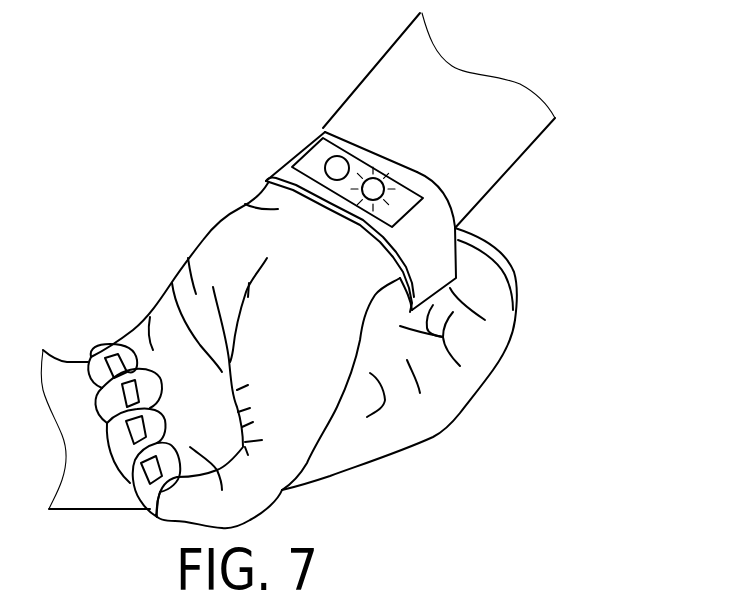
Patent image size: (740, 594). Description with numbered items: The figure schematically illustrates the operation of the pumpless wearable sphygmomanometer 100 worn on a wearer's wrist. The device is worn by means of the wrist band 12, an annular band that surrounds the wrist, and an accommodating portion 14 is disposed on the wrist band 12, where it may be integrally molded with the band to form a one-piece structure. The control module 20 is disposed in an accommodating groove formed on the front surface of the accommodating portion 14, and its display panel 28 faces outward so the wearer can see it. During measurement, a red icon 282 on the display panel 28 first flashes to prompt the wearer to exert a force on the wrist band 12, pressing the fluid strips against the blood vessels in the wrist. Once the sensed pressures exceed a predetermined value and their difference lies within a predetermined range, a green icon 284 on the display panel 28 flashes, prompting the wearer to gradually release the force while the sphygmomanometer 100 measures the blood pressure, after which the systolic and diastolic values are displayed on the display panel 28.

The pumpless wearable sphygmomanometer 100 is at (296, 126).
The control module 20 is at (313, 128).
The red icon 282 is at (340, 165).
The green icon 284 is at (396, 190).
The display panel 28 is at (302, 154).
The accommodating portion 14 is at (413, 173).
The wrist band 12 is at (427, 252).